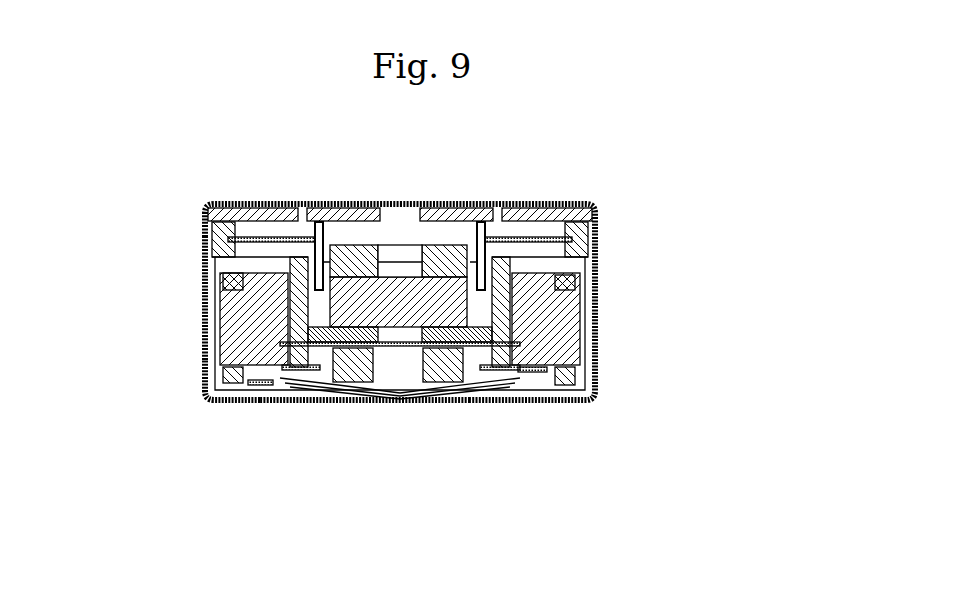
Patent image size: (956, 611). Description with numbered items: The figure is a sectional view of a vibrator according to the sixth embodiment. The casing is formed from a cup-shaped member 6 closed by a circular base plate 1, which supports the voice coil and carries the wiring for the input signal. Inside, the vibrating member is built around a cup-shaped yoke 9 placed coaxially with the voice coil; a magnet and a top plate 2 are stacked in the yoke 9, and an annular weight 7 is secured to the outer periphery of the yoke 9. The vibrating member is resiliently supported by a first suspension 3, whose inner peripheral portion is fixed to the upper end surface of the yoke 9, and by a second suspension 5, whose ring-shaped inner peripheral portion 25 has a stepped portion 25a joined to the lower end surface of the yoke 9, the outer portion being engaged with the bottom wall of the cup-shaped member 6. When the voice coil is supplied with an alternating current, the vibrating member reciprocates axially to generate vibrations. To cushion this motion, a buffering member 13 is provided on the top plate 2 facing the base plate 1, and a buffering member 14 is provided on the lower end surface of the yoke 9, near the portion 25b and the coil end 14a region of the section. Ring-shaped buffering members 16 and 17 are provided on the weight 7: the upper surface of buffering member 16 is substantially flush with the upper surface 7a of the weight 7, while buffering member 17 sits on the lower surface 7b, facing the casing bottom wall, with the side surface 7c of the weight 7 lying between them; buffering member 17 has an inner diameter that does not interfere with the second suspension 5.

The base plate 1 is at (520, 206).
The top plate 2 is at (448, 262).
The first suspension 3 is at (597, 203).
The second suspension 5 is at (547, 400).
The cup-shaped member 6 is at (598, 277).
The weight 7 is at (226, 345).
The upper surface of the weight 7a is at (203, 238).
The lower surface of the weight 7b is at (267, 368).
The housing side portion 7c is at (203, 320).
The yoke 9 is at (508, 300).
The buffering member 13 is at (352, 262).
The buffering member 14 is at (355, 358).
The coil lead 14a is at (380, 378).
The buffering member 16 is at (262, 273).
The buffering member 17 is at (210, 407).
The inner peripheral portion 25 is at (553, 528).
The stepped portion 25a is at (493, 367).
The second lead wire 25b is at (471, 378).